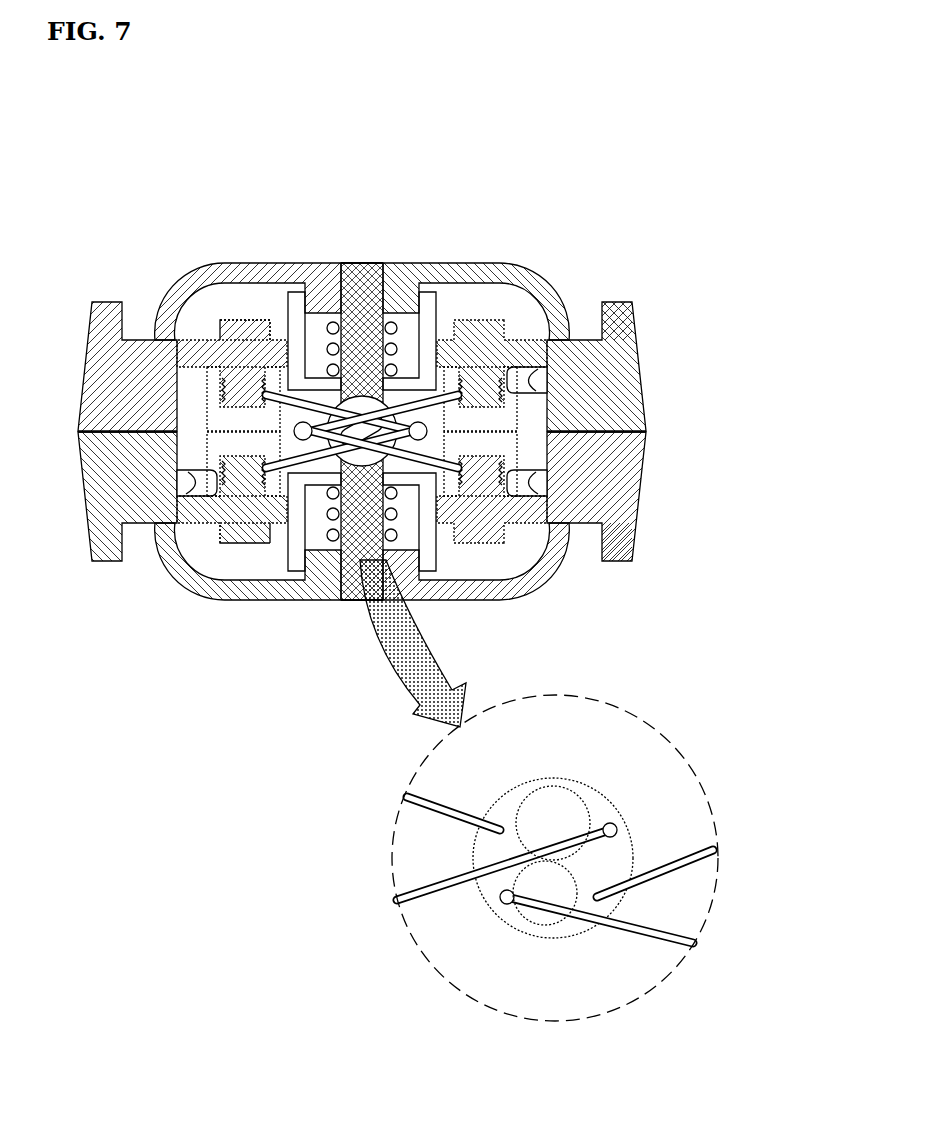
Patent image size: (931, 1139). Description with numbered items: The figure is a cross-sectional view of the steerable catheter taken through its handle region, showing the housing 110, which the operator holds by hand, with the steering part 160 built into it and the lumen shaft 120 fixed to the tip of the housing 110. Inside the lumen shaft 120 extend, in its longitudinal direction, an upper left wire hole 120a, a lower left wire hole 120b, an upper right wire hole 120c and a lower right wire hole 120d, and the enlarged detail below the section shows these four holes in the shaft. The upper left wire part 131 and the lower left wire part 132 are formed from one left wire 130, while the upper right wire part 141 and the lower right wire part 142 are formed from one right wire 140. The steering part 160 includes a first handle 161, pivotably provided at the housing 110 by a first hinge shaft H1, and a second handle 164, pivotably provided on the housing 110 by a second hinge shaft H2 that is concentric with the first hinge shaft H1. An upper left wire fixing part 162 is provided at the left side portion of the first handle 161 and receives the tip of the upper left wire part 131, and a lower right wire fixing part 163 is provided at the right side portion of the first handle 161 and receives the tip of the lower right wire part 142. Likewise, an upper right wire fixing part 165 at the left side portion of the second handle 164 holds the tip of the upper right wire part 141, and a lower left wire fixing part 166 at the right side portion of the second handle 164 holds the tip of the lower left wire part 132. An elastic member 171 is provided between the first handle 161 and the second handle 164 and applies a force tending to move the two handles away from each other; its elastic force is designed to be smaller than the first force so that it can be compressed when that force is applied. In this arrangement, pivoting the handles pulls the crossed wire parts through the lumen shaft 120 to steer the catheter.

The housing 110 is at (520, 262).
The lumen shaft 120 is at (392, 403).
The upper left wire hole 120a is at (470, 840).
The lower left wire hole 120b is at (515, 905).
The upper right wire hole 120c is at (620, 832).
The lower right wire hole 120d is at (690, 935).
The left wire 130 is at (245, 330).
The upper left wire part 131 is at (262, 333).
The lower left wire part 132 is at (425, 500).
The right wire 140 is at (245, 533).
The upper right wire part 141 is at (295, 525).
The lower right wire part 142 is at (425, 380).
The steering part 160 is at (645, 398).
The first handle 161 is at (620, 337).
The upper left wire fixing part 162 is at (168, 322).
The lower right wire fixing part 163 is at (495, 393).
The second handle 164 is at (620, 530).
The upper right wire fixing part 165 is at (215, 480).
The lower left wire fixing part 166 is at (498, 458).
The elastic member 171 is at (322, 307).
The first hinge shaft H1 is at (365, 290).
The second hinge shaft H2 is at (352, 586).